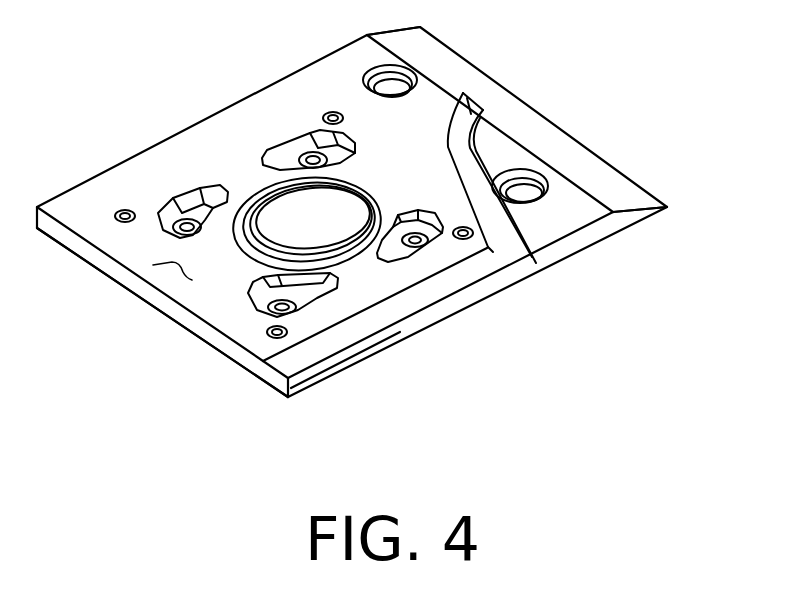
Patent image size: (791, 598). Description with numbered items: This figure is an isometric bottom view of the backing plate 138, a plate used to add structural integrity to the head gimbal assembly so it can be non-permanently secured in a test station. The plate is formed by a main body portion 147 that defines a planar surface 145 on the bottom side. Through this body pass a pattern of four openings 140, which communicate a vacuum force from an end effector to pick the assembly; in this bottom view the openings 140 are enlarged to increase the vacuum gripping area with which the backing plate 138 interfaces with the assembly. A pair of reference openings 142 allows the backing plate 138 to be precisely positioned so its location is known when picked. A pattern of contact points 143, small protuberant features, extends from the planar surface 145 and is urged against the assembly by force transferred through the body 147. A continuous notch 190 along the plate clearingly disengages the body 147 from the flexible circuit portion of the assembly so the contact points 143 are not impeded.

The backing plate 138 is at (593, 227).
The openings 140 is at (290, 137).
The reference openings 142 is at (552, 178).
The contact points 143 is at (335, 112).
The planar surface 145 is at (153, 265).
The main body portion 147 is at (223, 337).
The continuous notch 190 is at (478, 107).